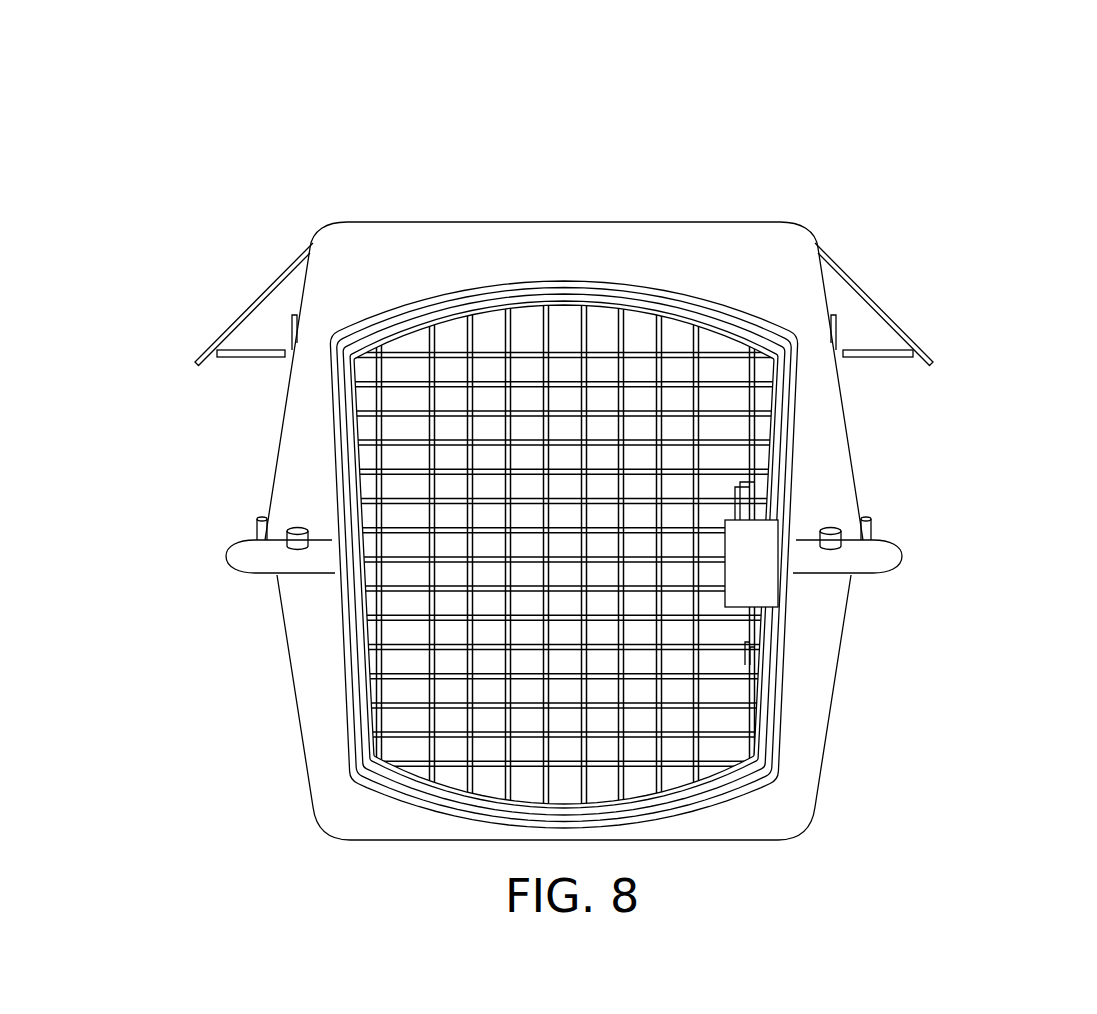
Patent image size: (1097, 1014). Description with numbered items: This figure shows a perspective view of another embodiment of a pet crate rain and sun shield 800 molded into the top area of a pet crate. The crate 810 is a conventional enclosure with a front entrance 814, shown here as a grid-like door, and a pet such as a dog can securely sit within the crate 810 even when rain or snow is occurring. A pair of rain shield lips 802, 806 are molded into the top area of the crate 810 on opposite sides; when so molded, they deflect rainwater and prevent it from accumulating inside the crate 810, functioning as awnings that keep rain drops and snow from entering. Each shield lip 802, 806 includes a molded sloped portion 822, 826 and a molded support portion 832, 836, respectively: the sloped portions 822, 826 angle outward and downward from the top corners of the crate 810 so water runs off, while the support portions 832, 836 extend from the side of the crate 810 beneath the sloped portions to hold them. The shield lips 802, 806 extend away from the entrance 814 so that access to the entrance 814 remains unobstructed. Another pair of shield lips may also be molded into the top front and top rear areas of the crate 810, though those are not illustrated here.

The pet carrier 800 is at (722, 148).
The rain shield lip 802 is at (951, 237).
The rain shield lip 806 is at (183, 242).
The crate 810 is at (246, 634).
The entrance 814 is at (388, 657).
The molded sloped portion 822 is at (870, 292).
The molded sloped portion 826 is at (268, 288).
The molded support portion 832 is at (885, 357).
The molded support portion 836 is at (262, 357).